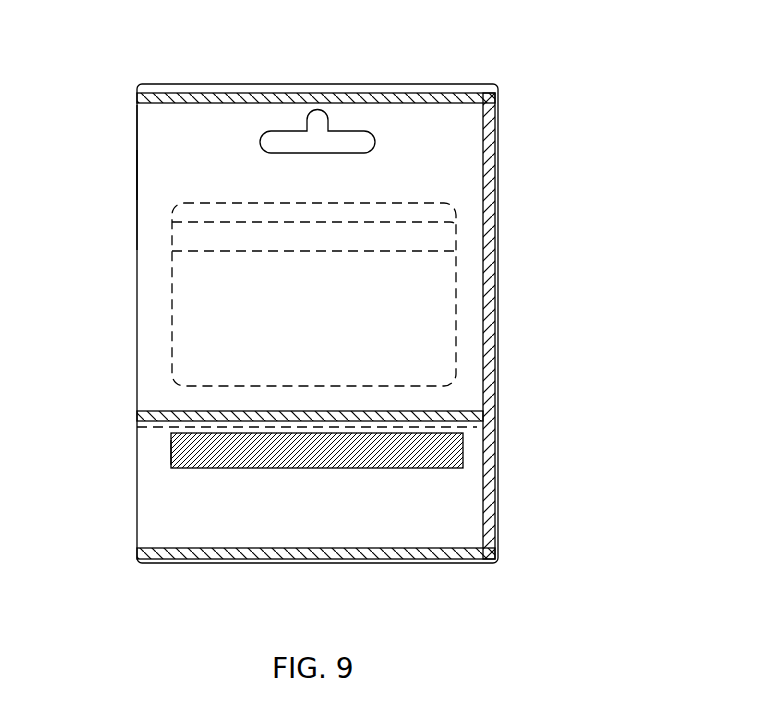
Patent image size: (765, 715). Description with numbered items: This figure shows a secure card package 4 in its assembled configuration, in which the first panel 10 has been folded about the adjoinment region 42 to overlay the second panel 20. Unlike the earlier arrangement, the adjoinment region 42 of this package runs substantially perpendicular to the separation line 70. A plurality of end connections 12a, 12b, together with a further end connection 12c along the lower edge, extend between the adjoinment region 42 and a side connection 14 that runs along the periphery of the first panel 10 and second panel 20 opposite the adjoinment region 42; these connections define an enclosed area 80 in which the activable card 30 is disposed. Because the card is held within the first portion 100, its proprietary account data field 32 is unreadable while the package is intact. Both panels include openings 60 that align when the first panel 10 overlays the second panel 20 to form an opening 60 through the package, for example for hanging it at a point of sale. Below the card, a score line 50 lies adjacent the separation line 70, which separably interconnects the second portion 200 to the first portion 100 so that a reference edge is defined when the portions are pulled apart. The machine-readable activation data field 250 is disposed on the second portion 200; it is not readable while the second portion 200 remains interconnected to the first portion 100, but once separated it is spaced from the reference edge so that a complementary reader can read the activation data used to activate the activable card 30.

The secure card package 4 is at (514, 117).
The first panel 10 is at (417, 122).
The end connection 12a is at (175, 98).
The end connection 12b is at (137, 413).
The bottom flange 12c is at (192, 551).
The side connection 14 is at (492, 288).
The second panel 20 is at (137, 133).
The activable card 30 is at (200, 318).
The proprietary account data field 32 is at (200, 248).
The adjoinment region 42 is at (137, 197).
The score line 50 is at (478, 403).
The opening 60 is at (345, 148).
The separation line 70 is at (432, 420).
The enclosed area 80 is at (158, 345).
The first portion 100 is at (507, 212).
The second portion 200 is at (510, 490).
The machine-readable activation data field 250 is at (175, 462).